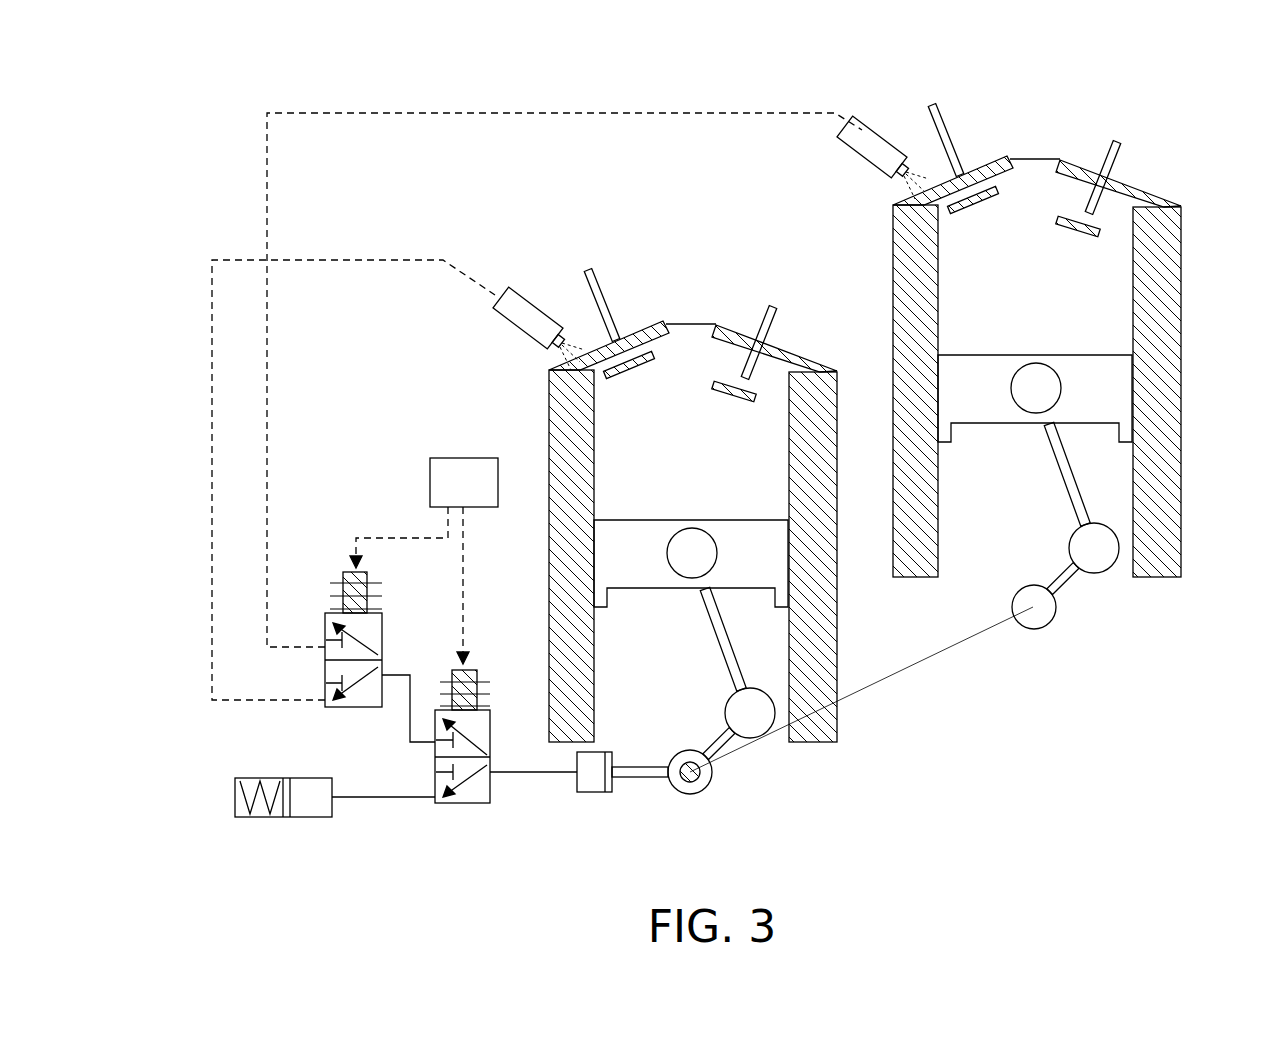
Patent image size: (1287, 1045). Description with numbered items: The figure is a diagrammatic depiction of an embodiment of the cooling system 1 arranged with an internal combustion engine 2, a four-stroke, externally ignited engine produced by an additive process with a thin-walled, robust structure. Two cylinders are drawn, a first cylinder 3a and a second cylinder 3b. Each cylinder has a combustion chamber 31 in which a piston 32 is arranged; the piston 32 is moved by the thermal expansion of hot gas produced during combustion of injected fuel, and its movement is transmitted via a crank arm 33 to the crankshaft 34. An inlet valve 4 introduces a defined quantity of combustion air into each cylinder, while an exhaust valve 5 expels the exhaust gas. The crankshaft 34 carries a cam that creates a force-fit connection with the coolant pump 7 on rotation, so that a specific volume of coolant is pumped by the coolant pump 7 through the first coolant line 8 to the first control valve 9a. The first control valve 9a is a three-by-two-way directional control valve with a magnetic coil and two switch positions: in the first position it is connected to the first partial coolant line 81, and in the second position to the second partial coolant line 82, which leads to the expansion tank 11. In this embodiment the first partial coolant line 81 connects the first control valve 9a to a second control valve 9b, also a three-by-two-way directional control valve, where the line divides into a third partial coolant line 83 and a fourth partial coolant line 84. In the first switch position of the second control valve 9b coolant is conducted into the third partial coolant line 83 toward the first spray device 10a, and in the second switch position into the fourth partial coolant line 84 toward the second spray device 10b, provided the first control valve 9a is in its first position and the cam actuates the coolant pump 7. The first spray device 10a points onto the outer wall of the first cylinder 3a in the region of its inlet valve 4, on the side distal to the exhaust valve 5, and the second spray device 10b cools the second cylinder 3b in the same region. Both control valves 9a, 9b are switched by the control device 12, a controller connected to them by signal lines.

The cooling system 1 is at (1054, 710).
The internal combustion engine 2 is at (1214, 448).
The first cylinder 3a is at (837, 700).
The second cylinder 3b is at (1188, 290).
The inlet valve 4 is at (591, 266).
The exhaust valve 5 is at (772, 302).
The coolant pump 7 is at (590, 800).
The first coolant line 8 is at (535, 776).
The first control valve 9a is at (480, 662).
The second control valve 9b is at (352, 570).
The first spray device 10a is at (520, 297).
The second spray device 10b is at (875, 130).
The expansion tank 11 is at (310, 820).
The control device 12 is at (468, 468).
The combustion chamber 31 is at (800, 355).
The piston 32 is at (787, 563).
The crank arm 33 is at (737, 648).
The crankshaft 34 is at (690, 796).
The first partial coolant line 81 is at (410, 672).
The second partial coolant line 82 is at (403, 802).
The third partial coolant line 83 is at (211, 458).
The fourth partial coolant line 84 is at (268, 405).